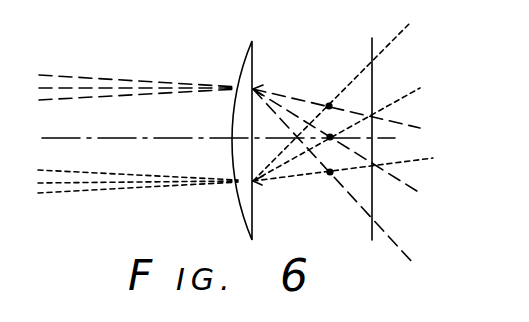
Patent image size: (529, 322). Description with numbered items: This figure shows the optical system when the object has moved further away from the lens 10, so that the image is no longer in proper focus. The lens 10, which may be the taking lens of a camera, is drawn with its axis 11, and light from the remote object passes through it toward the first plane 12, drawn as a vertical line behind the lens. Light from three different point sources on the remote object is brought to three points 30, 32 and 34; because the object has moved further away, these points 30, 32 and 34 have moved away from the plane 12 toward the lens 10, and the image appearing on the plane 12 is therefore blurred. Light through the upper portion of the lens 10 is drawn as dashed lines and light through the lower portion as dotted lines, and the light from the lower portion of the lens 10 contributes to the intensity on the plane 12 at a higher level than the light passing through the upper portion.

The lens 10 is at (240, 63).
The axis 11 is at (56, 137).
The first plane 12 is at (372, 48).
The point 30 is at (329, 104).
The point 32 is at (331, 135).
The point 34 is at (330, 174).